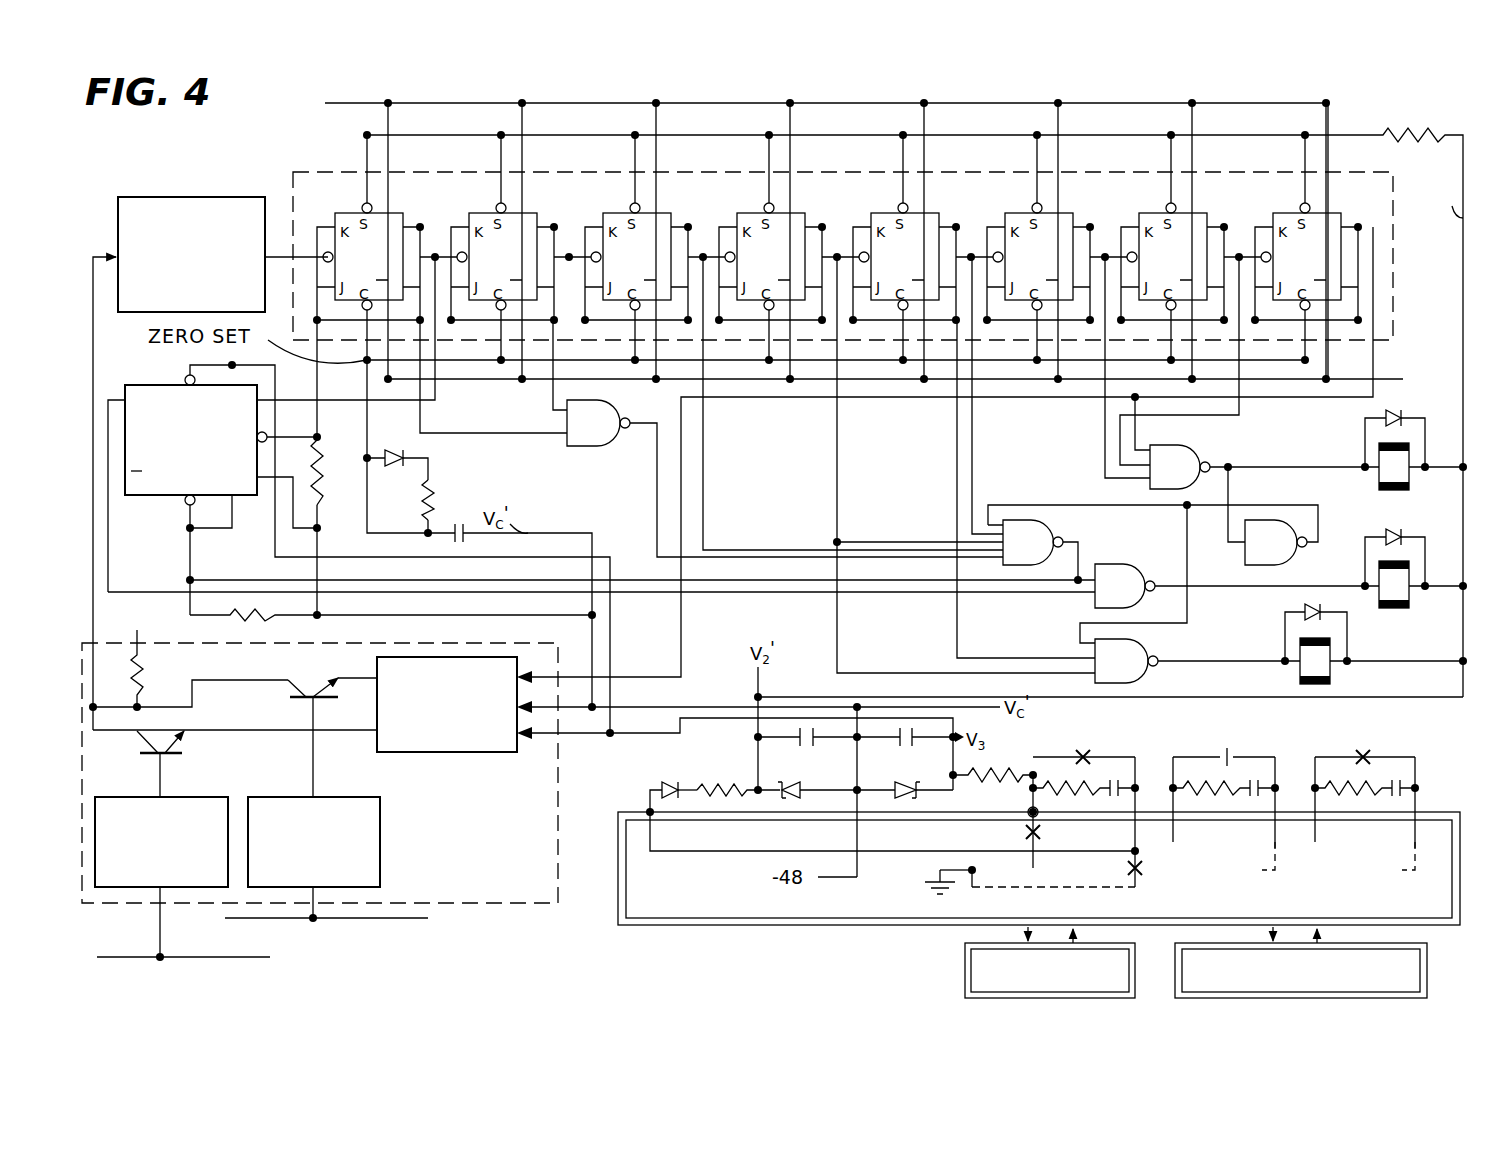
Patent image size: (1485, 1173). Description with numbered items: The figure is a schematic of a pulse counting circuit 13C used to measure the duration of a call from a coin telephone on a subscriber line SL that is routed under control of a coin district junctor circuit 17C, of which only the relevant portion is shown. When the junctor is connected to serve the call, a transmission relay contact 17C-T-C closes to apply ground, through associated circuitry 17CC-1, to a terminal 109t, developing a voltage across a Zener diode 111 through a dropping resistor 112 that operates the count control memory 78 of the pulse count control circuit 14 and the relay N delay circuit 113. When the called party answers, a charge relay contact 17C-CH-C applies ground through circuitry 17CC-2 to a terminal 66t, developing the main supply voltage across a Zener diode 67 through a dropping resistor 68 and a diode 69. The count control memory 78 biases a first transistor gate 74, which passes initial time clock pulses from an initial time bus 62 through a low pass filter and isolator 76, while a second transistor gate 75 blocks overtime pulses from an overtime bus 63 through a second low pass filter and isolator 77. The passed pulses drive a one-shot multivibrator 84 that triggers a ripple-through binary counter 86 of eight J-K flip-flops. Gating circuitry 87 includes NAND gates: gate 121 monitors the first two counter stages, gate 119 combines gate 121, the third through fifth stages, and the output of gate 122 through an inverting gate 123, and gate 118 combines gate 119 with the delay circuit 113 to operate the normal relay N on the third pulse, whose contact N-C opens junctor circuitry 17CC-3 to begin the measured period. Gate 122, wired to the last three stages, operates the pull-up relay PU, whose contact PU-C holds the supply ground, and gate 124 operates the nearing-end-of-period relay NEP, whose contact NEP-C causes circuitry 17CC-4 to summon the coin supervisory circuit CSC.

The pulse counting circuit 13C is at (262, 168).
The binary counter 86 is at (343, 171).
The one-shot multivibrator 84 is at (165, 197).
The relay N delay circuit 113 is at (170, 382).
The NAND gate 121 is at (592, 447).
The gating circuitry 87 is at (1002, 482).
The NAND gate 119 is at (1048, 522).
The NAND gate 118 is at (1108, 566).
The NAND gate 122 is at (1165, 446).
The inverting gate 123 is at (1290, 565).
The NAND gate 124 is at (1140, 641).
The pull-up relay PU is at (1409, 480).
The normal relay N is at (1409, 598).
The nearing-end-of-period relay NEP is at (1330, 674).
The pulse count control circuit 14 is at (488, 912).
The first transistor gate 74 is at (303, 692).
The second transistor gate 75 is at (146, 756).
The count control memory 78 is at (377, 744).
The low pass filter and isolator 77 is at (168, 797).
The low pass filter and isolator 76 is at (286, 797).
The overtime bus 63 is at (145, 957).
The initial time bus 62 is at (258, 918).
The terminal 66t is at (650, 812).
The diode 69 is at (666, 782).
The dropping resistor 68 is at (718, 783).
The Zener diode 67 is at (796, 785).
The Zener diode 111 is at (899, 782).
The dropping resistor 112 is at (984, 770).
The coin district junctor circuit 17C is at (745, 926).
The transmission relay contact 17C-T-C is at (1024, 835).
The terminal 109t is at (1040, 816).
The associated circuitry 17CC-1 is at (1033, 868).
The associated circuitry 17CC-2 is at (972, 889).
The charge relay contact 17C-CH-C is at (1130, 880).
The pull-up relay contact PU-C is at (1083, 752).
The normal relay contact N-C is at (1227, 748).
The junctor circuitry 17CC-3 is at (1275, 845).
The nearing-end-of-period relay contact NEP-C is at (1363, 757).
The conventional circuitry 17CC-4 is at (1415, 845).
The coin telephone subscriber line SL is at (965, 968).
The coin supervisory circuit CSC is at (1427, 978).